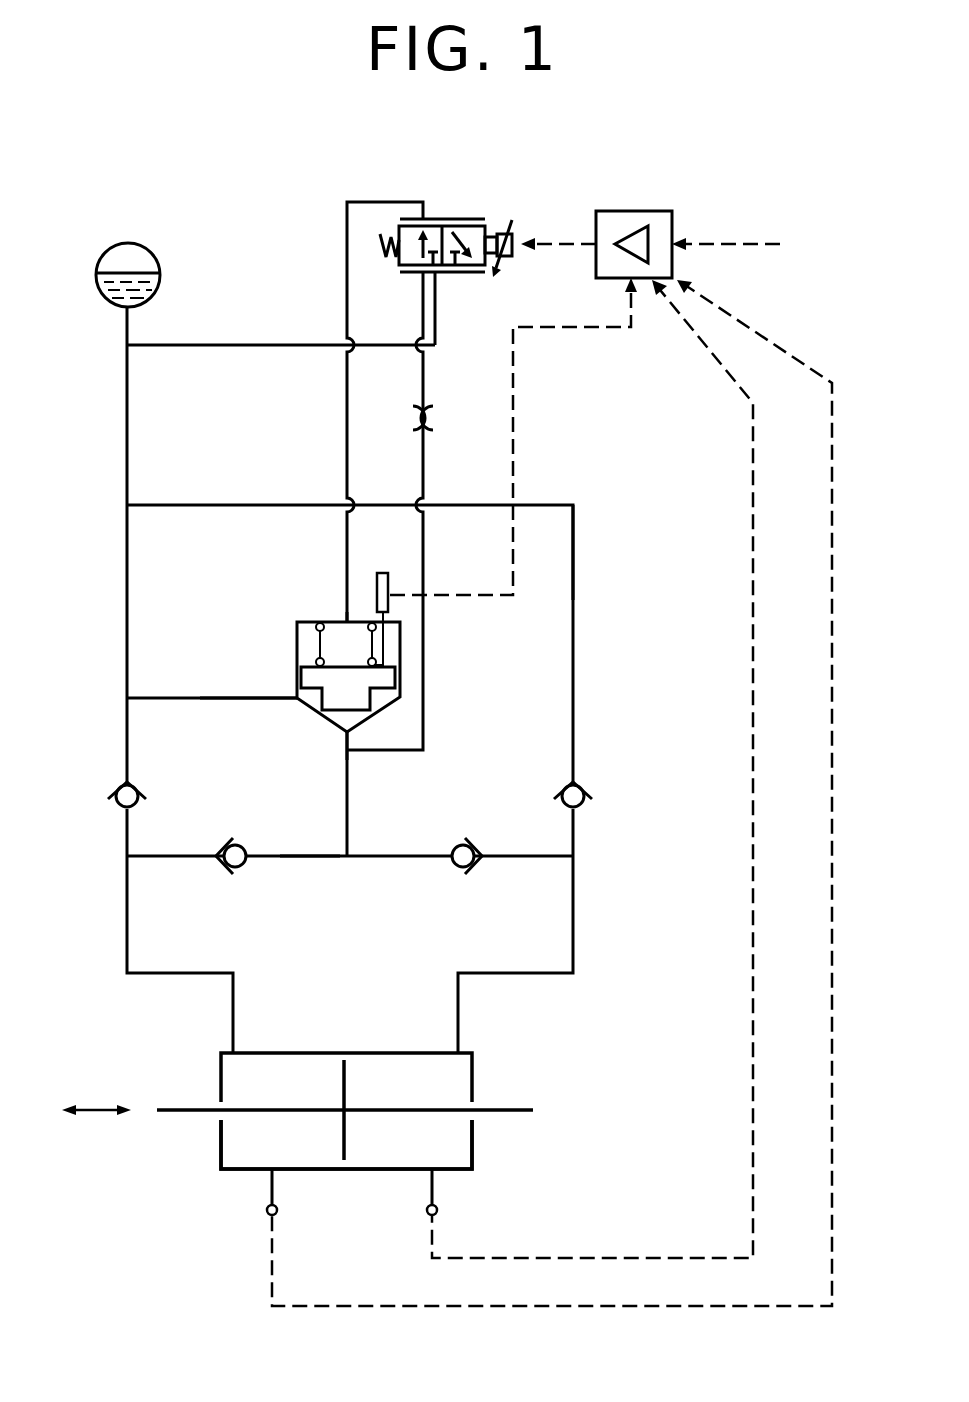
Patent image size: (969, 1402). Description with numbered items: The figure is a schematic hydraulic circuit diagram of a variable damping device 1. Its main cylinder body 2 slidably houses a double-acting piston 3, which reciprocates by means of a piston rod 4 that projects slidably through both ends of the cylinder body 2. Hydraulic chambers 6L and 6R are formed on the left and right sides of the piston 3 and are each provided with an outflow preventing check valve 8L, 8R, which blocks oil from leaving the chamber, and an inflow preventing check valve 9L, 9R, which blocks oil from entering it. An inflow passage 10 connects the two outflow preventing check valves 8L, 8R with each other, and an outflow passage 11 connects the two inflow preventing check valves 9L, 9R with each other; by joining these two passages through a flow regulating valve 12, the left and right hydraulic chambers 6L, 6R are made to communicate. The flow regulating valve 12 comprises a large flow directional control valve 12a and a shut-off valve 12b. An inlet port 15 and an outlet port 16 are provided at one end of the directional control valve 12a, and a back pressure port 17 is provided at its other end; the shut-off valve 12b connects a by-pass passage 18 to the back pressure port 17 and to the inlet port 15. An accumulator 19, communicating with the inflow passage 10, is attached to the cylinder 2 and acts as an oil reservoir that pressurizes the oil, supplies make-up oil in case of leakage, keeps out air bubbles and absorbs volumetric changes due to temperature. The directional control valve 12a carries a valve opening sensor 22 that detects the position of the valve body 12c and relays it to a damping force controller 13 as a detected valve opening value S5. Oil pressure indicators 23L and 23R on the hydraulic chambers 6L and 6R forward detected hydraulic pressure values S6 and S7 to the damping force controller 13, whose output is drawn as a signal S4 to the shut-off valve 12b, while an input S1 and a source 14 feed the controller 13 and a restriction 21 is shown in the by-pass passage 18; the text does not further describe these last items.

The variable damping device 1 is at (595, 1118).
The main cylinder body 2 is at (283, 1053).
The double-acting piston 3 is at (346, 1140).
The piston rod 4 is at (517, 1108).
The left hydraulic chamber 6L is at (243, 1155).
The right hydraulic chamber 6R is at (460, 1145).
The left outflow preventing check valve 8L is at (122, 789).
The right outflow preventing check valve 8R is at (584, 789).
The left inflow preventing check valve 9L is at (243, 868).
The right inflow preventing check valve 9R is at (472, 868).
The inflow passage 10 is at (573, 578).
The outflow passage 11 is at (311, 858).
The flow regulating valve 12 is at (361, 642).
The large flow directional control valve 12a is at (297, 650).
The shut-off valve 12b is at (455, 219).
The valve body 12c is at (375, 680).
The damping force controller 13 is at (633, 211).
The input signal source 14 is at (745, 245).
The inlet port 15 is at (347, 732).
The outlet port 16 is at (297, 697).
The back pressure port 17 is at (347, 618).
The by-pass passage 18 is at (424, 462).
The accumulator 19 is at (160, 268).
The orifice 21 is at (412, 418).
The valve opening sensor 22 is at (383, 573).
The left oil pressure indicator 23L is at (277, 1214).
The right oil pressure indicator 23R is at (437, 1210).
The input signal S1 is at (723, 244).
The control signal to solenoid valve S4 is at (553, 244).
The detected valve opening value S5 is at (513, 552).
The detected hydraulic pressure value S6 is at (753, 616).
The detected hydraulic pressure value S7 is at (832, 616).